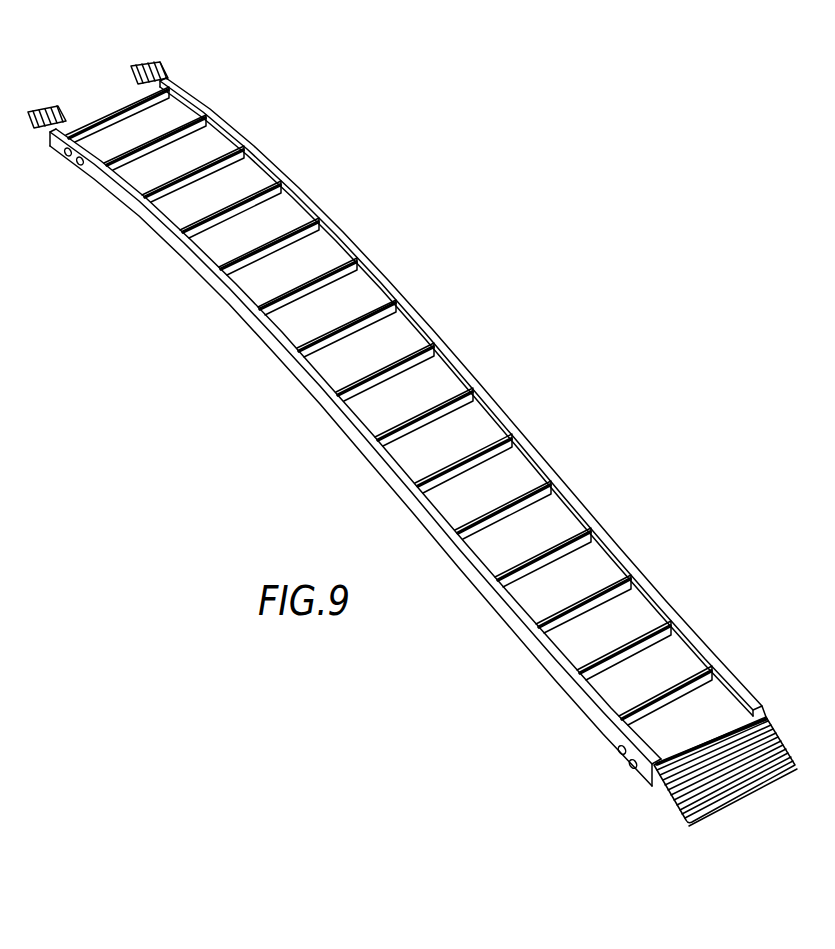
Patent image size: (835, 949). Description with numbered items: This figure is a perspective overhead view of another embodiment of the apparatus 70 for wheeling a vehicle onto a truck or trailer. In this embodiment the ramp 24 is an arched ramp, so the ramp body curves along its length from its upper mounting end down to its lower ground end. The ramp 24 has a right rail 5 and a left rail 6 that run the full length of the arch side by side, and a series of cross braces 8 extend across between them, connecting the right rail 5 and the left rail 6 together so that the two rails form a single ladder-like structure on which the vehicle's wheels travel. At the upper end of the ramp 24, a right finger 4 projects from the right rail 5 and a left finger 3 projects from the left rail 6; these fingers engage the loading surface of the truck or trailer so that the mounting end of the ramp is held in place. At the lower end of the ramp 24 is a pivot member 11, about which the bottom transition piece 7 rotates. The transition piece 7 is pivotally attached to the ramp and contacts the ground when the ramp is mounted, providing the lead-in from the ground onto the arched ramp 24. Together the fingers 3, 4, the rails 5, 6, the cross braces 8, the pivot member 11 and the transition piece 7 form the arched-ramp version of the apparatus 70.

The apparatus 70 is at (412, 422).
The left finger 3 is at (46, 111).
The right finger 4 is at (153, 61).
The right rail 5 is at (362, 250).
The left rail 6 is at (355, 474).
The transition piece 7 is at (772, 743).
The cross braces 8 is at (521, 488).
The pivot member 11 is at (645, 776).
The ramp 24 is at (331, 413).